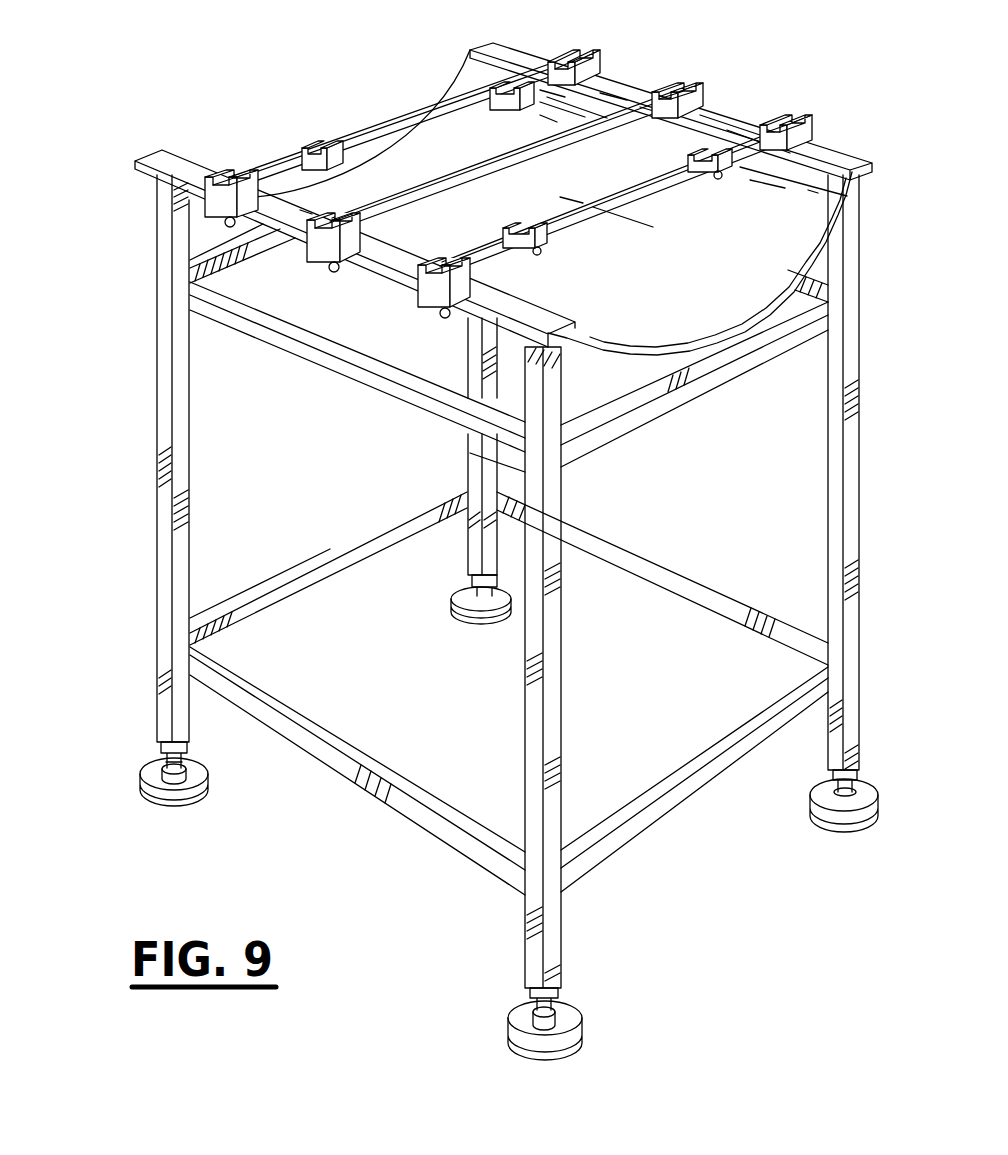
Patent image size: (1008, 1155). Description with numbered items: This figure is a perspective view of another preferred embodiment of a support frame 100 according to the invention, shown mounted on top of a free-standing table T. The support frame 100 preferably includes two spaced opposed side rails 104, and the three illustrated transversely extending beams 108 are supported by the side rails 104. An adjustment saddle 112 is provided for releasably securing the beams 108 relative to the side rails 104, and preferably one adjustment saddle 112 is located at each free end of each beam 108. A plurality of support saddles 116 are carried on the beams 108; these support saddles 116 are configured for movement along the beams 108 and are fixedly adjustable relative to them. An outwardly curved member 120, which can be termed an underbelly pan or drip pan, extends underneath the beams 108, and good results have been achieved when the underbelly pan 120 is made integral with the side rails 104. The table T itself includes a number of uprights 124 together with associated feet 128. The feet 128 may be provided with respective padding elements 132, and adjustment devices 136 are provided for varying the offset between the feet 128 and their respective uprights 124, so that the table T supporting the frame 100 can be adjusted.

The support frame 100 is at (470, 551).
The free-standing table T is at (461, 617).
The side rail 104 is at (384, 261).
The transversely extending beam 108 is at (410, 125).
The adjustment saddle 112 is at (220, 203).
The support saddle 116 is at (722, 173).
The outwardly curved member 120 is at (693, 297).
The upright 124 is at (556, 673).
The foot 128 is at (200, 774).
The padding element 132 is at (462, 620).
The adjustment device 136 is at (145, 753).